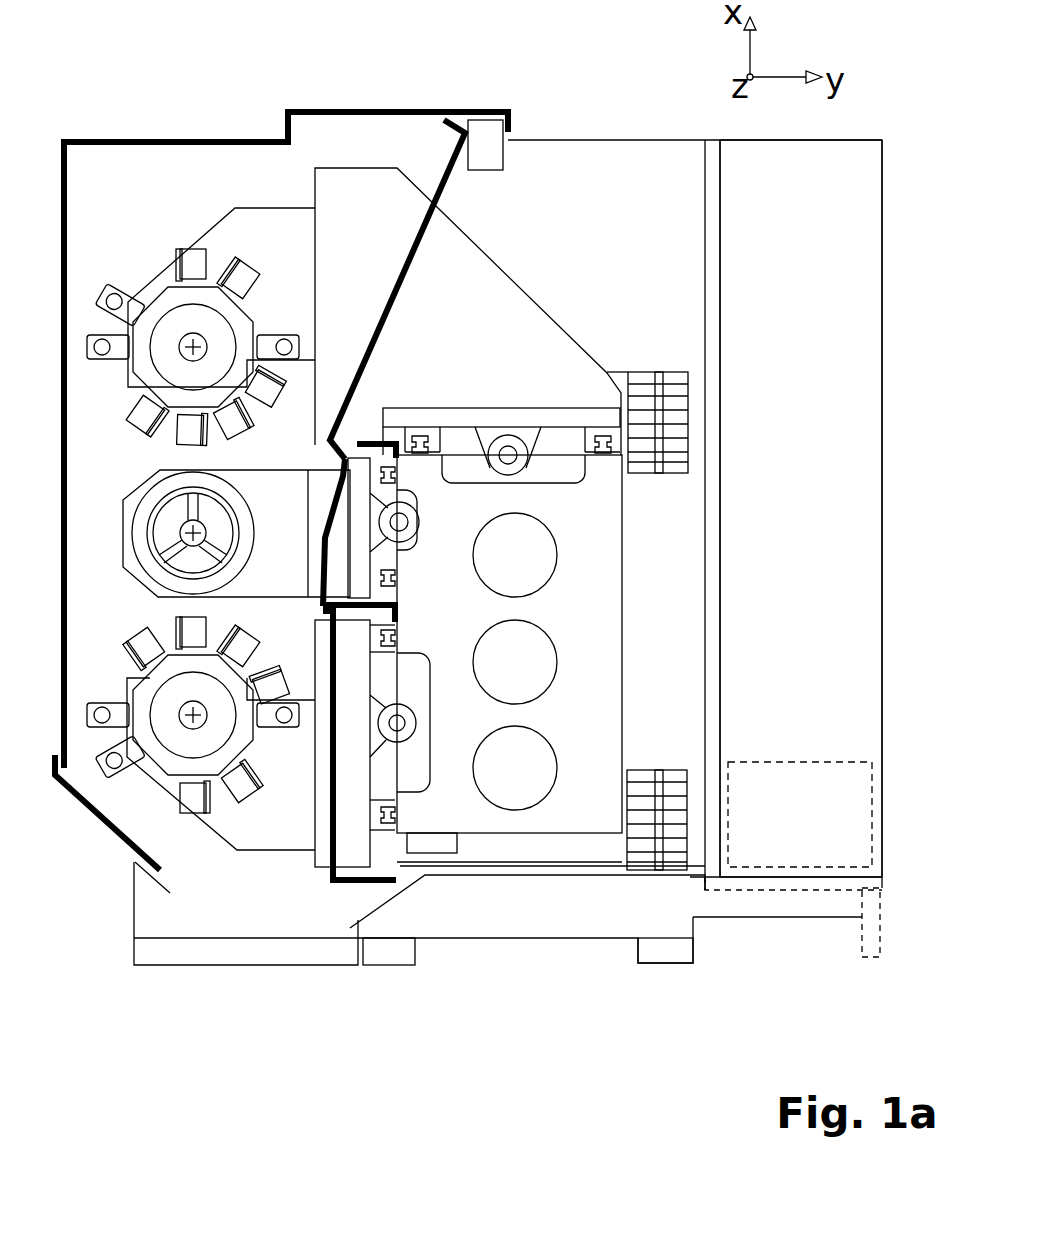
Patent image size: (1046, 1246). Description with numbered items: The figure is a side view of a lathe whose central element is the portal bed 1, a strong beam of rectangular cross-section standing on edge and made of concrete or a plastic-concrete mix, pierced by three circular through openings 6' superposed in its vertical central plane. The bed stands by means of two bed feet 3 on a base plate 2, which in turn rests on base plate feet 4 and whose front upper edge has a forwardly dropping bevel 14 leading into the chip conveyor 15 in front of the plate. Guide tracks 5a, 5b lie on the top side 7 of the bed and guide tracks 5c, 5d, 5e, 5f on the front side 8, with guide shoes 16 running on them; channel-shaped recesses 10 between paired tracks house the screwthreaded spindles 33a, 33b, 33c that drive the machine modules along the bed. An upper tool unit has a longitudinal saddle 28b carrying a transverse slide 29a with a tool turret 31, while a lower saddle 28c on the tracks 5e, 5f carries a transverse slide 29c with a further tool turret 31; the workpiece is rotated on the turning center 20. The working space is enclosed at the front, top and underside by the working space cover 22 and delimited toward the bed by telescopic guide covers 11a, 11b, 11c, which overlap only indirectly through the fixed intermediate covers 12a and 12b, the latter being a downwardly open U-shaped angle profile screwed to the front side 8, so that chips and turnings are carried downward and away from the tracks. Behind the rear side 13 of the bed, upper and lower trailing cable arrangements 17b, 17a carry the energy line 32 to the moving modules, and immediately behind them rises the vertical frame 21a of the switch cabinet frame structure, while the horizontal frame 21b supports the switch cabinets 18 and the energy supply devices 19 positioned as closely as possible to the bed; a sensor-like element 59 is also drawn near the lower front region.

The portal bed 1 is at (509, 644).
The base plate 2 is at (527, 919).
The bed feet 3 is at (551, 850).
The base plate feet 4 is at (624, 929).
The guide track 5a is at (600, 440).
The guide track 5b is at (425, 440).
The guide track 5c is at (395, 474).
The guide track 5d is at (393, 583).
The guide track 5e is at (398, 638).
The guide track 5f is at (398, 815).
The through openings 6' is at (515, 661).
The top side 7 is at (625, 450).
The front side 8 is at (397, 833).
The channel-shaped recesses 10 is at (411, 722).
The guide cover 11a is at (448, 180).
The guide cover 11b is at (332, 512).
The guide cover 11c is at (335, 785).
The intermediate cover 12a is at (362, 438).
The intermediate cover 12b is at (323, 608).
The rear side 13 is at (611, 300).
The bevel 14 is at (388, 902).
The chip conveyor 15 is at (246, 913).
The guide shoes 16 is at (617, 458).
The trailing cable arrangement 17a is at (660, 748).
The trailing cable arrangement 17b is at (660, 495).
The switch cabinets 18 is at (801, 508).
The energy supply devices 19 is at (770, 762).
The turning center 20 is at (190, 530).
The vertical frame 21a is at (712, 640).
The horizontal frame 21b is at (745, 885).
The working space cover 22 is at (128, 140).
The upper longitudinal rail 28b is at (471, 311).
The lower longitudinal rail 28c is at (354, 743).
The upper transverse rail 29a is at (221, 297).
The lower transverse rail 29c is at (221, 764).
The tool turret 31 is at (190, 350).
The energy line 32 is at (590, 867).
The screwthreaded spindle 33a is at (508, 445).
The screwthreaded spindle 33b is at (405, 530).
The screwthreaded spindle 33c is at (405, 725).
The sensor 59 is at (445, 842).